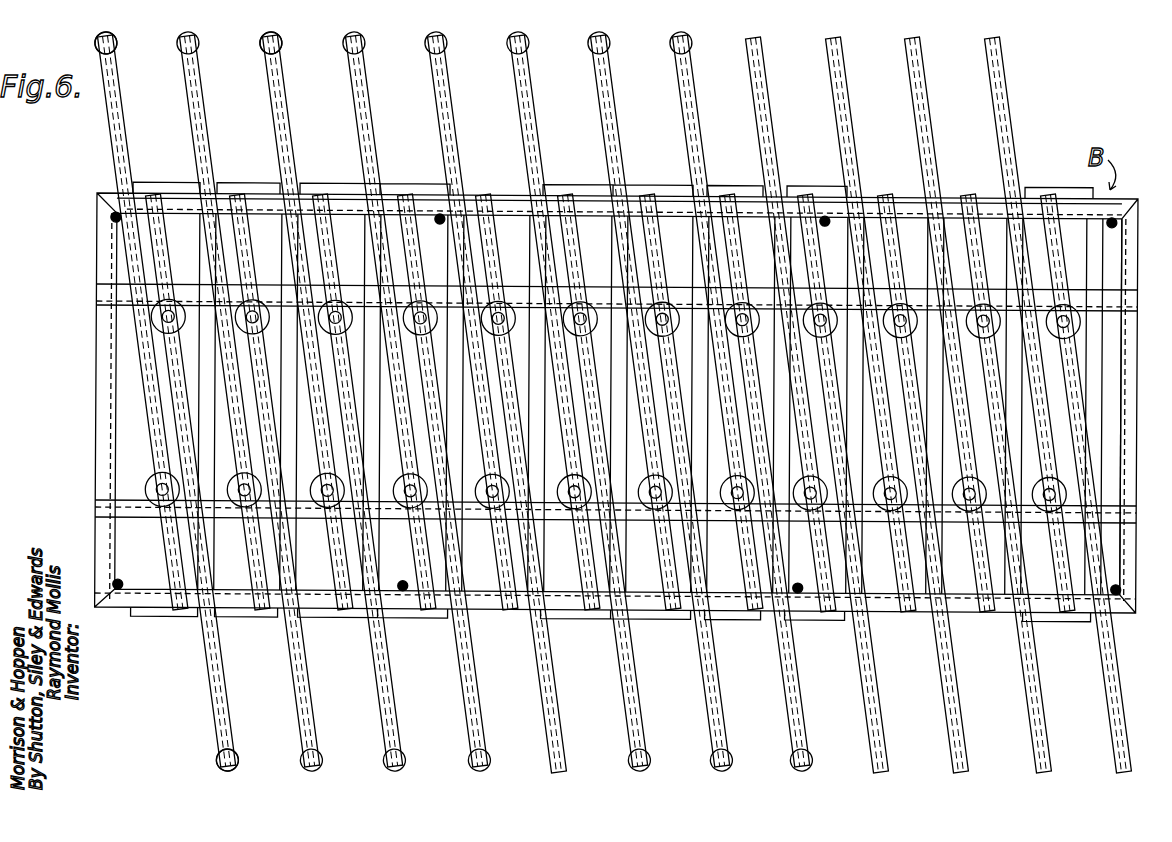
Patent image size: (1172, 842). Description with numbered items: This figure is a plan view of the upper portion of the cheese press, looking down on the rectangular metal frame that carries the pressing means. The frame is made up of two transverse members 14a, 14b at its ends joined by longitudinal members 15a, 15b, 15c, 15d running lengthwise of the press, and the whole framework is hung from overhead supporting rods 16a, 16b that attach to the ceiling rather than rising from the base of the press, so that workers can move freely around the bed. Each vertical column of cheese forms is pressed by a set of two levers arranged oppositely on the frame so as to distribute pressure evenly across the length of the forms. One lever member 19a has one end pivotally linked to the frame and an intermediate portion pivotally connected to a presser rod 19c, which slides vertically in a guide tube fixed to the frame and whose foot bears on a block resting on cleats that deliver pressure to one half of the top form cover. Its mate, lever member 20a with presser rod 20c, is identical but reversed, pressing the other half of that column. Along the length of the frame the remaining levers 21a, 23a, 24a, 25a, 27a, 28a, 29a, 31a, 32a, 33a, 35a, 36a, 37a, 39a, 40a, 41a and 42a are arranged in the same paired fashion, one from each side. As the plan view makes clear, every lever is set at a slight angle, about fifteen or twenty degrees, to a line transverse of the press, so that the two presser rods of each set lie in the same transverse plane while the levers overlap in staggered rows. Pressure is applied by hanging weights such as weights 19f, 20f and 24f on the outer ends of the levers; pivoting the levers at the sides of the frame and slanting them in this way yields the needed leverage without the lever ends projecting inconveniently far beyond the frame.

The transverse member 14a is at (97, 350).
The transverse member 14b is at (1122, 222).
The longitudinal member 15a is at (483, 207).
The longitudinal member 15b is at (500, 292).
The longitudinal member 15c is at (540, 548).
The longitudinal member 15d is at (570, 610).
The supporting rod 16a is at (110, 218).
The supporting rod 16b is at (119, 590).
The lever member 19a is at (207, 672).
The presser rod 19c is at (236, 320).
The weight 19f is at (216, 760).
The lever member 20a is at (110, 131).
The presser rod 20c is at (236, 480).
The weight 20f is at (94, 43).
The lever member 21a is at (296, 689).
The lever member 23a is at (384, 743).
The lever member 24a is at (280, 106).
The weight 24f is at (280, 42).
The lever member 25a is at (472, 753).
The lever member 27a is at (548, 741).
The lever member 28a is at (447, 60).
The lever member 29a is at (631, 755).
The lever member 31a is at (714, 755).
The lever member 32a is at (612, 60).
The lever member 33a is at (794, 757).
The lever member 35a is at (872, 762).
The lever member 36a is at (765, 65).
The lever member 37a is at (952, 762).
The lever member 39a is at (1035, 762).
The lever member 40a is at (930, 65).
The lever member 41a is at (1115, 762).
The lever member 42a is at (1008, 100).